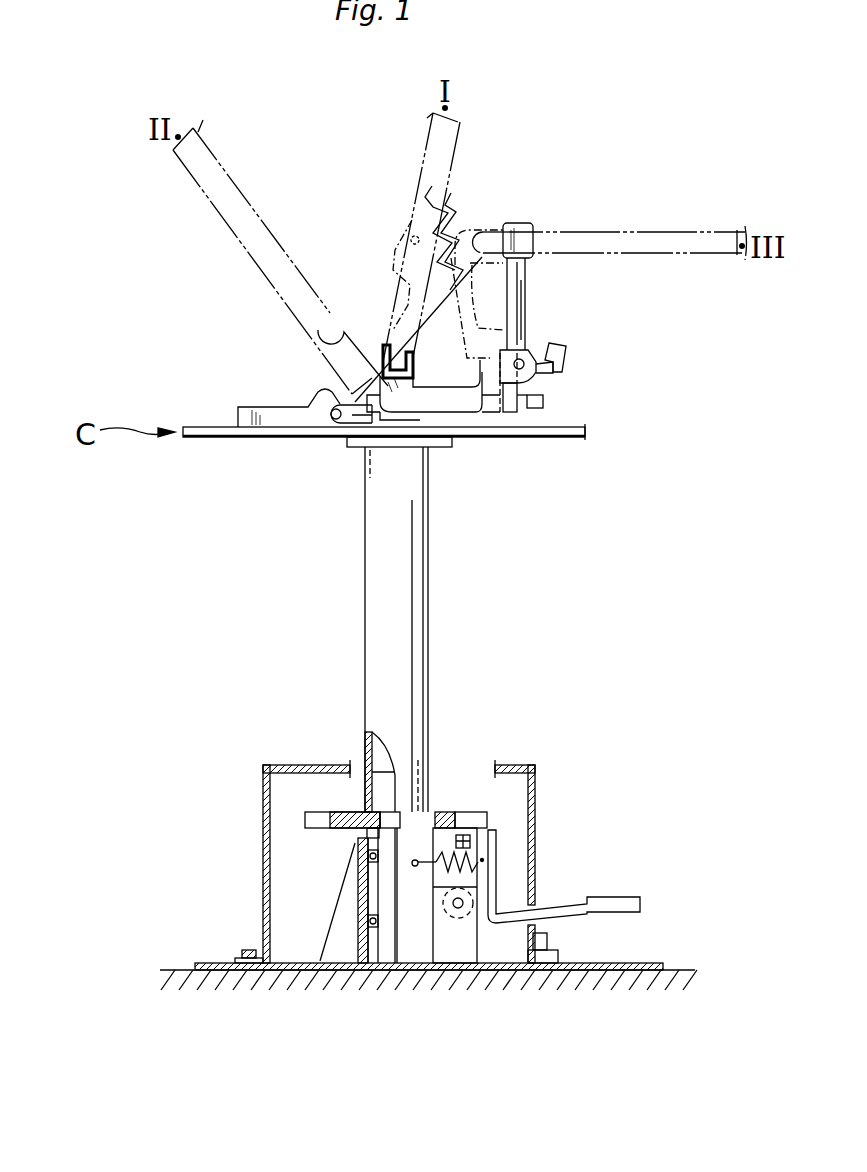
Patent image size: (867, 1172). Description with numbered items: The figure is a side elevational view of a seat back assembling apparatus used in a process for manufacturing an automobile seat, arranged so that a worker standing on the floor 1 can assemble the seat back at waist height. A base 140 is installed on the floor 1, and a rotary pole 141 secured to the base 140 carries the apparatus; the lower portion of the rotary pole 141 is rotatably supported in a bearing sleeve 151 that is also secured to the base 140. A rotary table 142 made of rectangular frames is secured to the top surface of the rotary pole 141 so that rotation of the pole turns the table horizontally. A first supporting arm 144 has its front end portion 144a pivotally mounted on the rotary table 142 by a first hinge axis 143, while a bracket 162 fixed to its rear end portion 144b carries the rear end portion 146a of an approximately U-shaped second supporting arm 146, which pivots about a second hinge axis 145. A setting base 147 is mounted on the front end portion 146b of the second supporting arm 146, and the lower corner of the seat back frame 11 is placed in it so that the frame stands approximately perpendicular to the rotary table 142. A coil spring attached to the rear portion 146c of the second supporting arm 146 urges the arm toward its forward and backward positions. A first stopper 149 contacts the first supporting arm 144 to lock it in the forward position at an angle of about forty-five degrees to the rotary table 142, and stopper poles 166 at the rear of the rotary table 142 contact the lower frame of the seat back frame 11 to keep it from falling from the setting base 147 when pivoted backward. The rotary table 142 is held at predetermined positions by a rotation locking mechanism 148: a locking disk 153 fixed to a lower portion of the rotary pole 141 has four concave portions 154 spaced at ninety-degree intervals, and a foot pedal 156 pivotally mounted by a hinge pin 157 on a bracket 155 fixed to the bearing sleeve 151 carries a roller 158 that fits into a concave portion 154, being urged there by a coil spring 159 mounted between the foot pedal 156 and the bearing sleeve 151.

The floor 1 is at (180, 970).
The seat back frame 11 is at (237, 183).
The base 140 is at (632, 965).
The rotary pole 141 is at (414, 645).
The rotary table 142 is at (587, 433).
The first hinge axis 143 is at (340, 424).
The first supporting arm 144 is at (465, 425).
The front end portion of first supporting arm 144a is at (343, 440).
The rear end portion of first supporting arm 144b is at (510, 425).
The second hinge axis 145 is at (530, 355).
The second supporting arm 146 is at (485, 430).
The rear end portion of second supporting arm 146a is at (540, 371).
The front end portion of second supporting arm 146b is at (400, 410).
The rear portion of second supporting arm 146c is at (565, 352).
The setting base 147 is at (382, 344).
The rotation locking mechanism 148 is at (450, 812).
The first stopper 149 is at (318, 400).
The bearing sleeve 151 is at (360, 898).
The locking disk 153 is at (337, 812).
The concave portion 154 is at (300, 820).
The bracket 155 is at (447, 965).
The foot pedal 156 is at (610, 896).
The hinge pin 157 is at (487, 965).
The roller 158 is at (470, 822).
The coil spring 159 is at (463, 857).
The bracket 162 is at (508, 430).
The stopper pole 166 is at (522, 225).